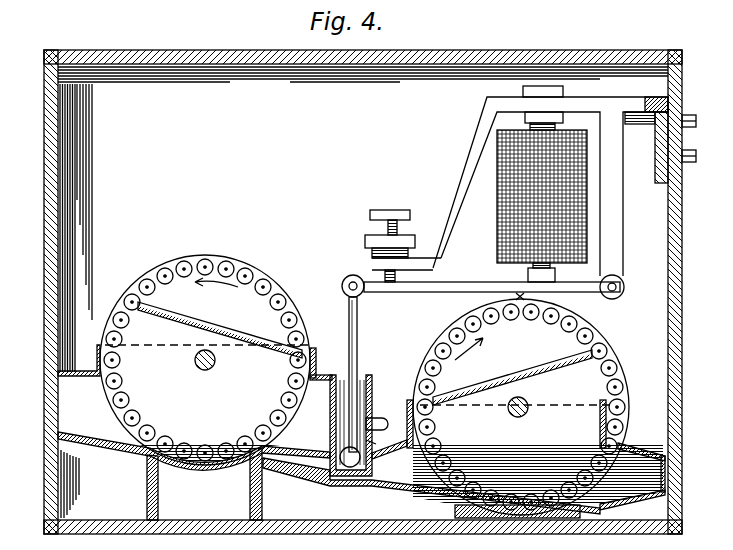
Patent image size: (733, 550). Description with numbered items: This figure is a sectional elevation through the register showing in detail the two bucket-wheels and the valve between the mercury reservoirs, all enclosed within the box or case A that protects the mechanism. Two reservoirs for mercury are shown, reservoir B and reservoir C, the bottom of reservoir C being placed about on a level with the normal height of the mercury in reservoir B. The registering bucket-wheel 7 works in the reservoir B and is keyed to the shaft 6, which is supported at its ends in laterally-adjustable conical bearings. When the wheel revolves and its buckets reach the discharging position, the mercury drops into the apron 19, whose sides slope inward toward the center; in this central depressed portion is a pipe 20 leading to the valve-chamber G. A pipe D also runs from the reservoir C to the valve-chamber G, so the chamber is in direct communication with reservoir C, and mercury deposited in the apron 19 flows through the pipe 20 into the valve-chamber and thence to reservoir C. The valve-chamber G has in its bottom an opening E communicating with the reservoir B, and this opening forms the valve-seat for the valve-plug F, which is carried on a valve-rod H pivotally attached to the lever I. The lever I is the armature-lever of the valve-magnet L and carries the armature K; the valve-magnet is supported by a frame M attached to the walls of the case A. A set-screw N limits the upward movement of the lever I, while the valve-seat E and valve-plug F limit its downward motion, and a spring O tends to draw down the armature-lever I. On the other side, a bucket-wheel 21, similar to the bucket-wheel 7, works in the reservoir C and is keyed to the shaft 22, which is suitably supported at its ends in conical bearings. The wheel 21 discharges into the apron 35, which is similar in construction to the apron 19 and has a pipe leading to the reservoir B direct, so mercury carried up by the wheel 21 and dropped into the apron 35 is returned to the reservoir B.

The box or case A is at (44, 408).
The reservoir B is at (630, 445).
The reservoir C is at (194, 432).
The pipe D is at (431, 486).
The opening E is at (347, 482).
The valve-plug F is at (330, 437).
The valve-chamber G is at (378, 444).
The valve-rod H is at (360, 352).
The armature-lever I is at (494, 295).
The armature K is at (528, 276).
The valve-magnet L is at (497, 222).
The frame M is at (480, 141).
The set-screw N is at (392, 212).
The spring O is at (542, 301).
The shaft 6 is at (524, 398).
The registering bucket-wheel 7 is at (518, 407).
The apron 19 is at (547, 364).
The pipe 20 is at (386, 418).
The bucket-wheel 21 is at (198, 262).
The shaft 22 is at (215, 366).
The apron 35 is at (220, 330).